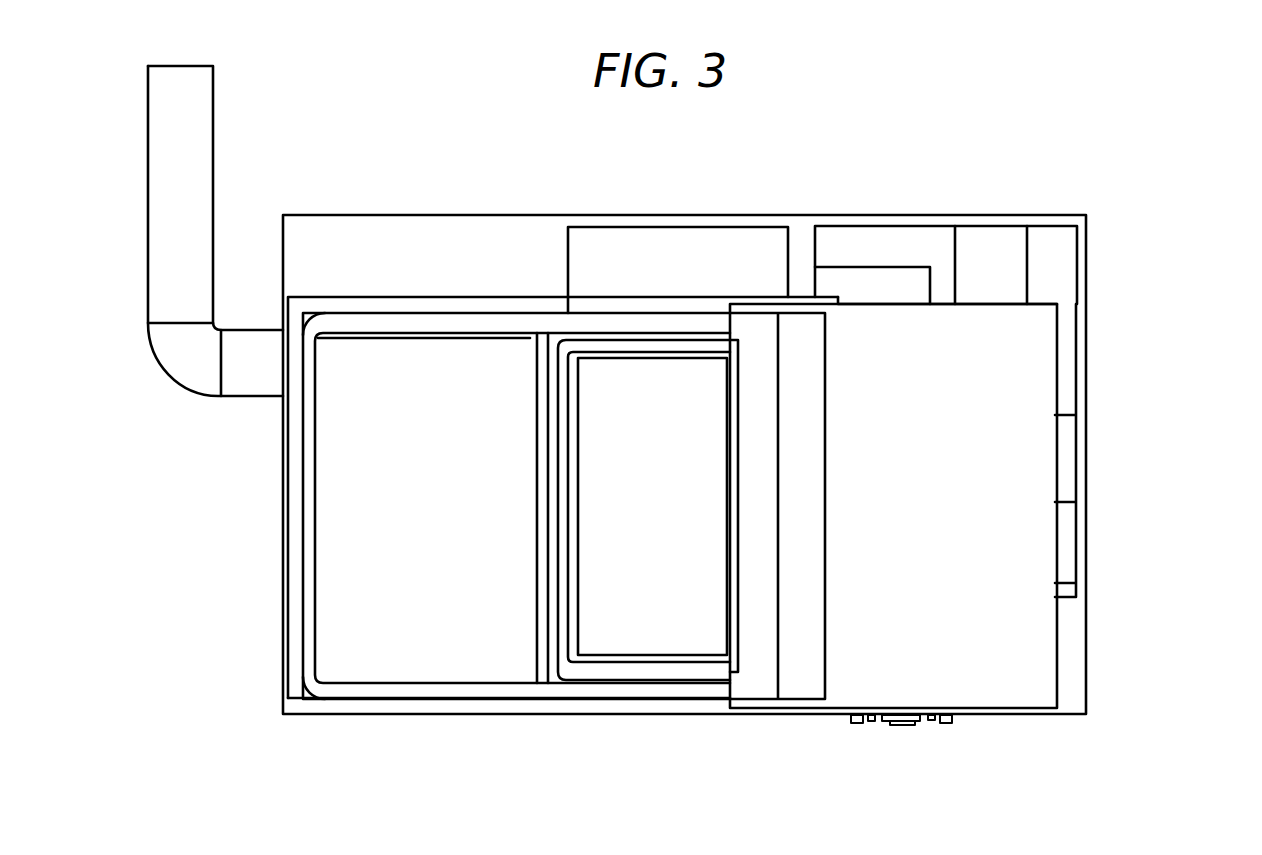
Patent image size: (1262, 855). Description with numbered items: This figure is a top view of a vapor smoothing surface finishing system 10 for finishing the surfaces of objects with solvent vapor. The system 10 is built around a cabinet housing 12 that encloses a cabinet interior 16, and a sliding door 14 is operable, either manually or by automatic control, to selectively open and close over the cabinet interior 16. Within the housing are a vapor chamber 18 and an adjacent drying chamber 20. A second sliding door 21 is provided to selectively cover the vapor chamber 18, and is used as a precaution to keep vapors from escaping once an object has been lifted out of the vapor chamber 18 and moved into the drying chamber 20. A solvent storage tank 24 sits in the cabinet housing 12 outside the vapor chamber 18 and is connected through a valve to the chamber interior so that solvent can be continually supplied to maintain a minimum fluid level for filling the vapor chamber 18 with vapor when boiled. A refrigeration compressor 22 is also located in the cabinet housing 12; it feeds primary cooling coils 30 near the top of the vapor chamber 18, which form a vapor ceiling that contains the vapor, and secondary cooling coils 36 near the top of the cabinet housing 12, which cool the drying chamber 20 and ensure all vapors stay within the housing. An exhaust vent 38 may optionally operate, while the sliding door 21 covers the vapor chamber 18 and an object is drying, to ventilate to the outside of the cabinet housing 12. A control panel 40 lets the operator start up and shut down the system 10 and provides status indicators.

The vapor smoothing surface finishing system 10 is at (1165, 198).
The cabinet housing 12 is at (1087, 402).
The sliding door 14 is at (1058, 660).
The cabinet interior 16 is at (324, 584).
The vapor chamber 18 is at (652, 411).
The drying chamber 20 is at (440, 422).
The sliding door 21 is at (540, 637).
The refrigeration compressor 22 is at (907, 233).
The solvent storage tank 24 is at (688, 275).
The primary cooling coils 30 is at (565, 672).
The secondary cooling coils 36 is at (313, 648).
The exhaust vent 38 is at (197, 120).
The control panel 40 is at (903, 725).